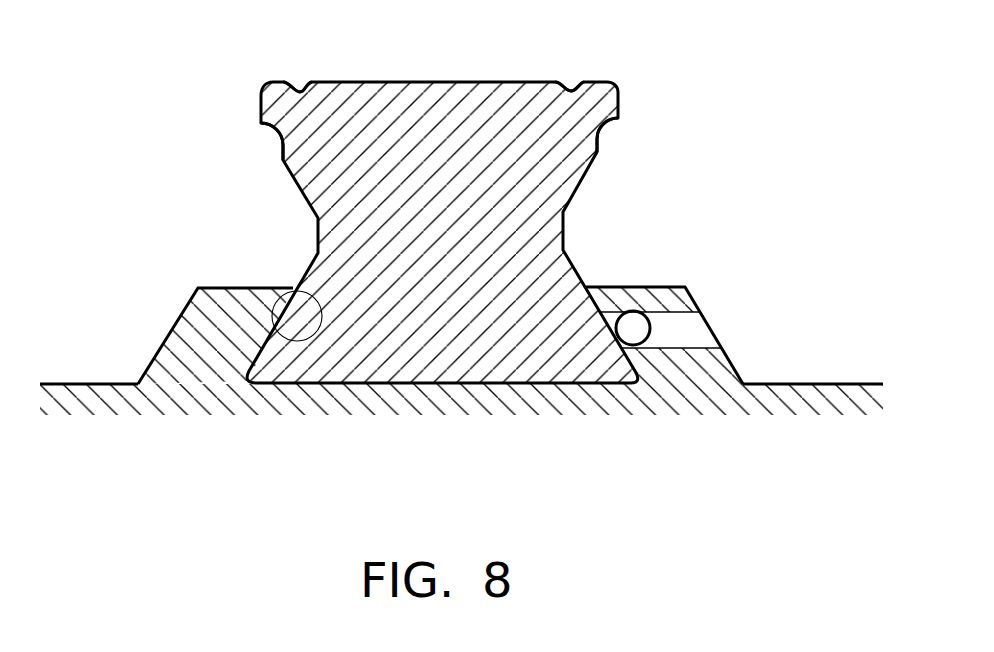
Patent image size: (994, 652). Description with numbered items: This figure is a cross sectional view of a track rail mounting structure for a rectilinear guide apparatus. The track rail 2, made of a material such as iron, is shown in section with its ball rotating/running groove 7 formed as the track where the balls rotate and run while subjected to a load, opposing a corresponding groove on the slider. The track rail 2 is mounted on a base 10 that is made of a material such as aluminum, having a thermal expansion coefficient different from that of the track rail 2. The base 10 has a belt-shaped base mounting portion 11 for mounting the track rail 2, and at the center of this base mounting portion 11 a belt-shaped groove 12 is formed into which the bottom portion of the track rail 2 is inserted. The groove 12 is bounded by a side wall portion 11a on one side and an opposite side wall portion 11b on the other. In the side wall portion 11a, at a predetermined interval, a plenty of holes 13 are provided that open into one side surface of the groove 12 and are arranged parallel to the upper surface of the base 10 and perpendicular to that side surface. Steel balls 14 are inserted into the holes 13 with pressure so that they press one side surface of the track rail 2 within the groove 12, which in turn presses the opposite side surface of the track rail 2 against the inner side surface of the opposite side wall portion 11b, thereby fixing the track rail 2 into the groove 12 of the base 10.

The track rail 2 is at (482, 82).
The ball rotating/running groove 7 is at (300, 92).
The base 10 is at (797, 383).
The base mounting portion 11 is at (443, 316).
The side wall portion 11a is at (685, 327).
The opposite side wall portion 11b is at (218, 288).
The groove 12 is at (290, 291).
The holes 13 is at (683, 347).
The steel balls 14 is at (640, 335).